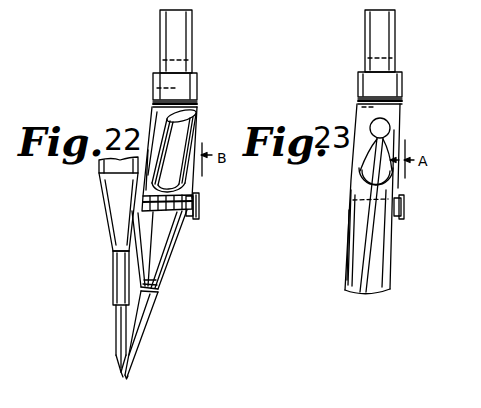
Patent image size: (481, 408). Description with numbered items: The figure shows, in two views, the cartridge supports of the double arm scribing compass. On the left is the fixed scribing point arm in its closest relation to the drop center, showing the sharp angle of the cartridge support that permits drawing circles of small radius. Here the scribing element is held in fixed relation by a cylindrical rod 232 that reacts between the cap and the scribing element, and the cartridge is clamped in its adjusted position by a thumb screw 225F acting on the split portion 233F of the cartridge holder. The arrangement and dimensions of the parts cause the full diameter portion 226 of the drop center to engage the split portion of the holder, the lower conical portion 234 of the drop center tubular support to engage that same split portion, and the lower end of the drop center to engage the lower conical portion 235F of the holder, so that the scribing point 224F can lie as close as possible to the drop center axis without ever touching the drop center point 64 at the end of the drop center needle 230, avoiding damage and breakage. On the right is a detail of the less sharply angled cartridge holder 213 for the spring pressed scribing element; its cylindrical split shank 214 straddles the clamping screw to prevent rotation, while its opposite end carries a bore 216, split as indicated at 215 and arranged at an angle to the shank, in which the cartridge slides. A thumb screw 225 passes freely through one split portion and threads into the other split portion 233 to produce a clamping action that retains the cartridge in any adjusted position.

In FIG. 22, the cylindrical rod 232 is at (186, 131).
In FIG. 22, the thumb screw 225F is at (199, 207).
In FIG. 22, the split portion of the cartridge holder 233F is at (148, 291).
In FIG. 22, the lower conical portion of the cartridge holder 235F is at (152, 314).
In FIG. 22, the scribing point 224F is at (129, 378).
In FIG. 22, the lower conical portion of the drop center tubular support 234 is at (109, 208).
In FIG. 22, the full diameter portion of the drop center 226 is at (117, 266).
In FIG. 22, the needle 230 is at (115, 320).
In FIG. 22, the drop center point 64 is at (121, 374).
In FIG. 23, the split shank 214 is at (385, 35).
In FIG. 23, the cartridge holder 213 is at (397, 112).
In FIG. 23, the bore 216 is at (386, 172).
In FIG. 23, the split 215 is at (363, 294).
In FIG. 23, the split portion of the cartridge holder 233 is at (346, 283).
In FIG. 23, the thumb screw 225 is at (405, 210).